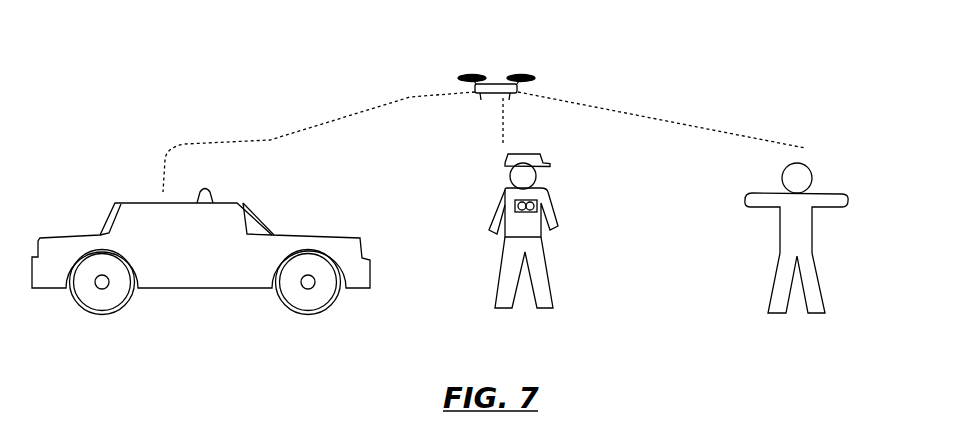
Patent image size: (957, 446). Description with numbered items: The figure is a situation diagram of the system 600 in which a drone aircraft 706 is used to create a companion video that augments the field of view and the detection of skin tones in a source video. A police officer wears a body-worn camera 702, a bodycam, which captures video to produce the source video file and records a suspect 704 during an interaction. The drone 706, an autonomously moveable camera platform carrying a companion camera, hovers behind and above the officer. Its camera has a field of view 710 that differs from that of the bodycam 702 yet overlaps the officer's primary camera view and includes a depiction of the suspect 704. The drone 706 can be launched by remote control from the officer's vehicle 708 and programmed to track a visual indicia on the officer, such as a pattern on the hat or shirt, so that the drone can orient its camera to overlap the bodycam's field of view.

The system 600 is at (243, 20).
The body-worn camera 702 is at (513, 207).
The suspect 704 is at (812, 223).
The drone aircraft 706 is at (477, 95).
The officer's vehicle 708 is at (128, 200).
The field of view 710 is at (610, 112).